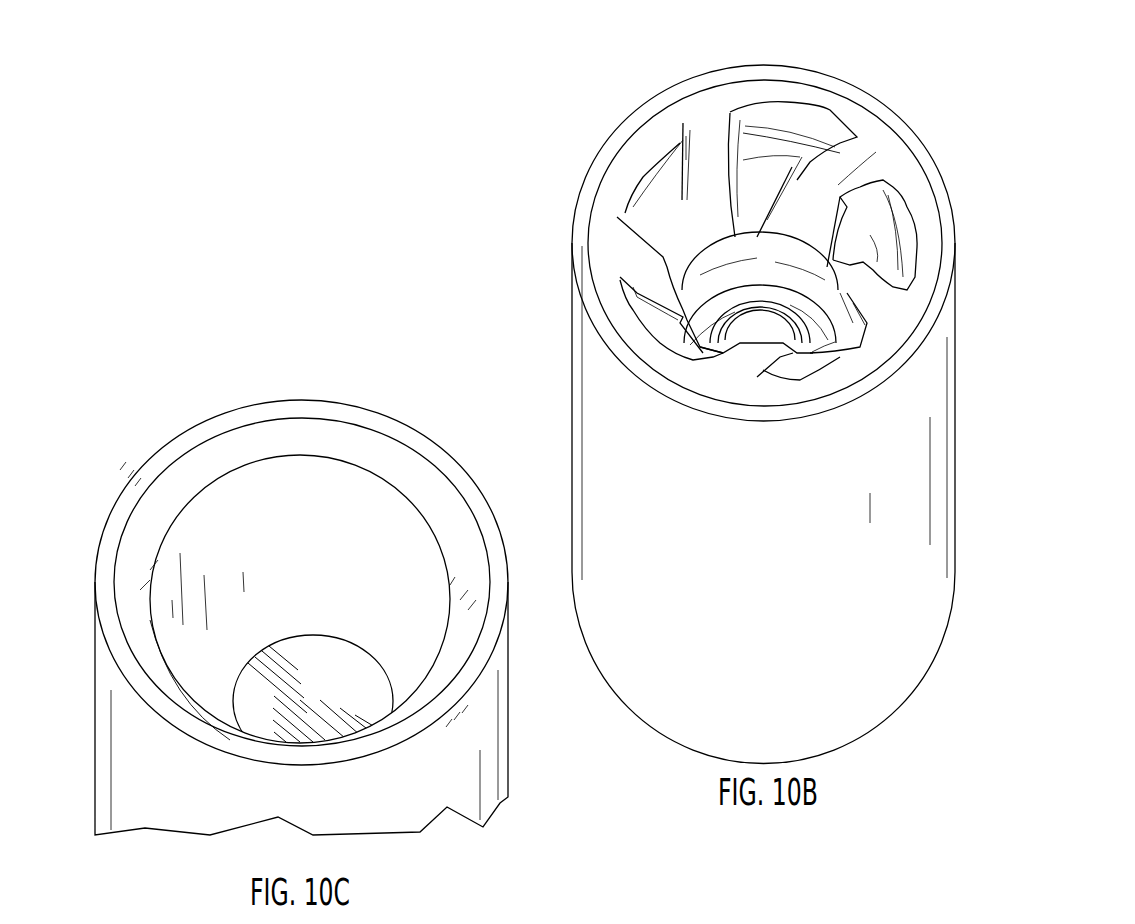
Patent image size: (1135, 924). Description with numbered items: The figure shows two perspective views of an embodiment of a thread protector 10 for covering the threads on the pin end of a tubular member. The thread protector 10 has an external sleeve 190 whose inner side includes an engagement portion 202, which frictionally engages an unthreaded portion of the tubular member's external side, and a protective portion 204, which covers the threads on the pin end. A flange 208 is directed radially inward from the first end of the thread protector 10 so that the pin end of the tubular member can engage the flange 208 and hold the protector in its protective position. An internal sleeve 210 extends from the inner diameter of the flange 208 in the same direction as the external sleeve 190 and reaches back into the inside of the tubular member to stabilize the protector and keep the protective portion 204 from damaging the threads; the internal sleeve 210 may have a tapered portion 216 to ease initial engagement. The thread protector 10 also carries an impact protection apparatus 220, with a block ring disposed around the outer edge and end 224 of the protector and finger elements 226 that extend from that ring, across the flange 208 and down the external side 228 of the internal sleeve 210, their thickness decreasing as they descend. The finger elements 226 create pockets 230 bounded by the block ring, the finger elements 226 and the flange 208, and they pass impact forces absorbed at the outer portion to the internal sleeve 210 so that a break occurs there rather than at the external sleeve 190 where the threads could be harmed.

In FIG. 10B, the thread protector 10 is at (619, 88).
In FIG. 10C, the thread protector 10 is at (196, 358).
In FIG. 10C, the external sleeve 190 is at (476, 486).
In FIG. 10C, the engagement portion 202 is at (328, 490).
In FIG. 10C, the protective portion 204 is at (218, 707).
In FIG. 10B, the flange 208 is at (903, 167).
In FIG. 10B, the internal sleeve 210 is at (787, 272).
In FIG. 10C, the internal sleeve 210 is at (333, 660).
In FIG. 10C, the tapered portion 216 is at (463, 634).
In FIG. 10B, the impact protection apparatus 220 is at (562, 178).
In FIG. 10B, the outer edge and end 224 is at (603, 250).
In FIG. 10B, the finger elements 226 is at (705, 205).
In FIG. 10B, the external side 228 is at (773, 199).
In FIG. 10B, the pockets 230 is at (894, 222).